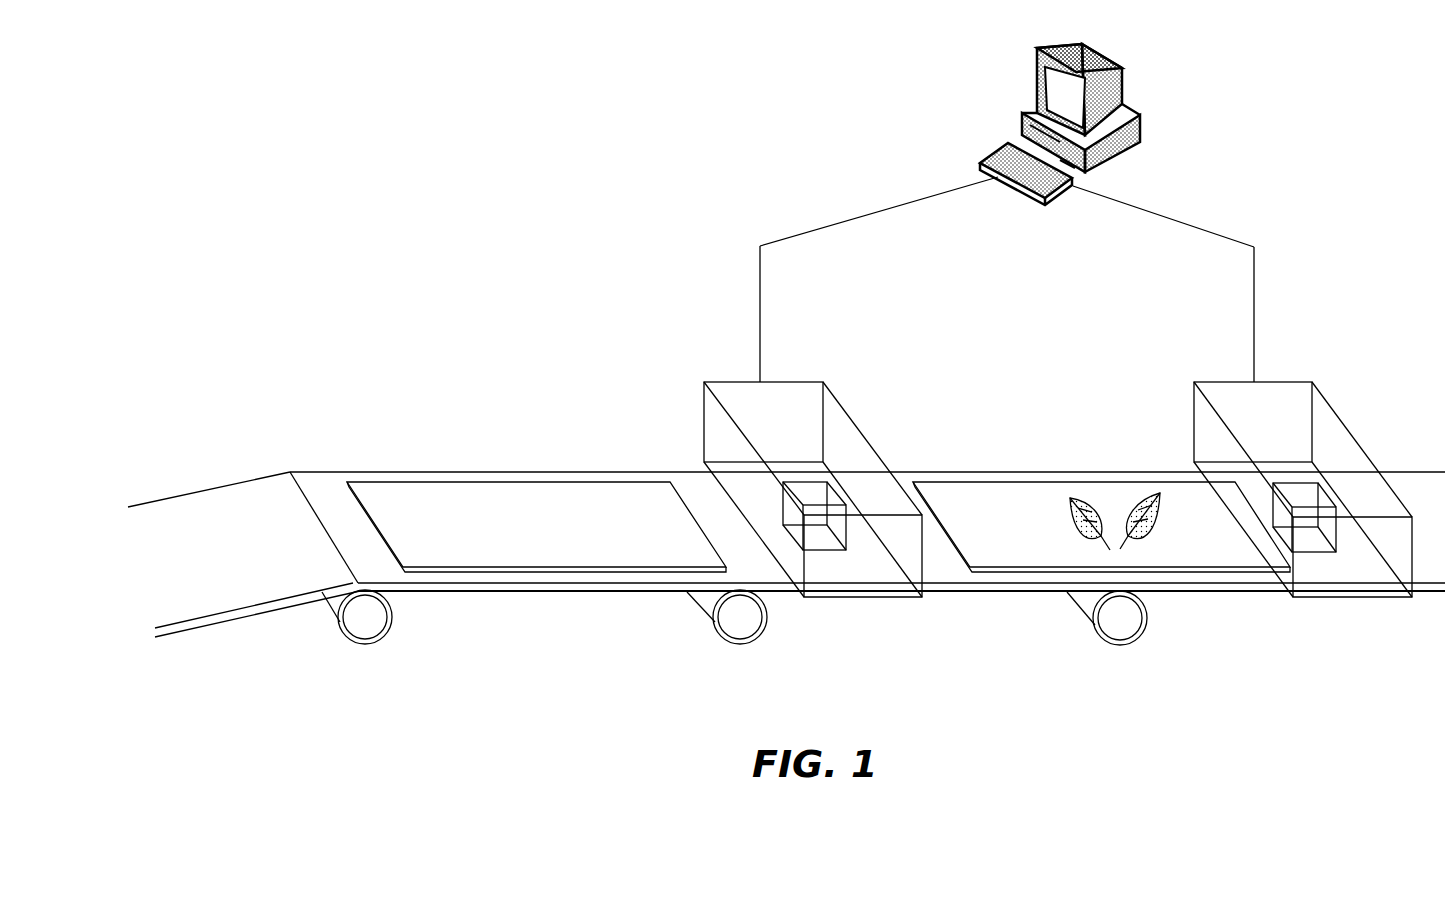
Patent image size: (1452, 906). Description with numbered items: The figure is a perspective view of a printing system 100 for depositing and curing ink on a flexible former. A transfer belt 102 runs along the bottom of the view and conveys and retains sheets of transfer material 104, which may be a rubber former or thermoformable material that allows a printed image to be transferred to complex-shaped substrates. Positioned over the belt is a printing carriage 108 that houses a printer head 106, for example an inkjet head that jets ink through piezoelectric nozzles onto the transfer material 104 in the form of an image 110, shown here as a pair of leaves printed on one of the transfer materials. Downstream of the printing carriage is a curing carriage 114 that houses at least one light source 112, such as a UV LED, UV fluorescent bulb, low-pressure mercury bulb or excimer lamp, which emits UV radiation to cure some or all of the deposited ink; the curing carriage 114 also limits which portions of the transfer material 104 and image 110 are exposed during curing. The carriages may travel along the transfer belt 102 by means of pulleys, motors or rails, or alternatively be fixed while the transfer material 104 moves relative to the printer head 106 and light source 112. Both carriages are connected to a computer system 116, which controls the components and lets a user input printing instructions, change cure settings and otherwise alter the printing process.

The printing system 100 is at (387, 202).
The transfer belt 102 is at (317, 569).
The transfer material 104 is at (460, 560).
The printer head 106 is at (820, 483).
The printing carriage 108 is at (797, 383).
The image 110 is at (1070, 498).
The light source 112 is at (1312, 483).
The curing carriage 114 is at (1258, 383).
The computer system 116 is at (1127, 102).